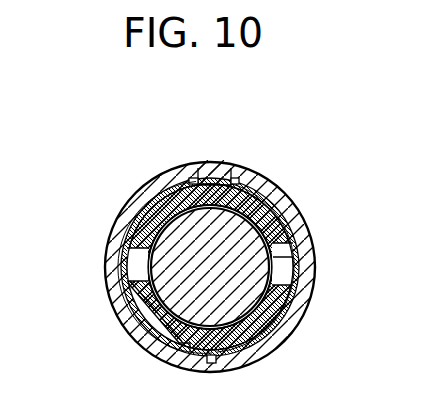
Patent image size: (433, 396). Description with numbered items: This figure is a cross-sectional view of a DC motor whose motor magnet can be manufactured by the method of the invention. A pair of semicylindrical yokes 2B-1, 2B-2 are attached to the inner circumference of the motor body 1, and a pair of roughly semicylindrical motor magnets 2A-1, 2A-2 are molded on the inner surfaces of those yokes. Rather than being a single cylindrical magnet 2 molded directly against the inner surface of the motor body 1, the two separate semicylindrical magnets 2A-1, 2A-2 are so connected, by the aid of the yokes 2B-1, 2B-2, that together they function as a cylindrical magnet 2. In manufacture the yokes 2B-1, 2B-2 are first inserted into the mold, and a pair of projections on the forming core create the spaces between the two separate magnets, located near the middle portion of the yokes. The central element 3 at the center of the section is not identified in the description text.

The motor body 1 is at (312, 256).
The cylindrical magnet 2 is at (217, 225).
The semicylindrical magnet 2A-1 is at (218, 190).
The semicylindrical magnet 2A-2 is at (278, 256).
The semicylindrical yoke 2B-1 is at (130, 229).
The semicylindrical yoke 2B-2 is at (292, 237).
The shaft 3 is at (271, 332).